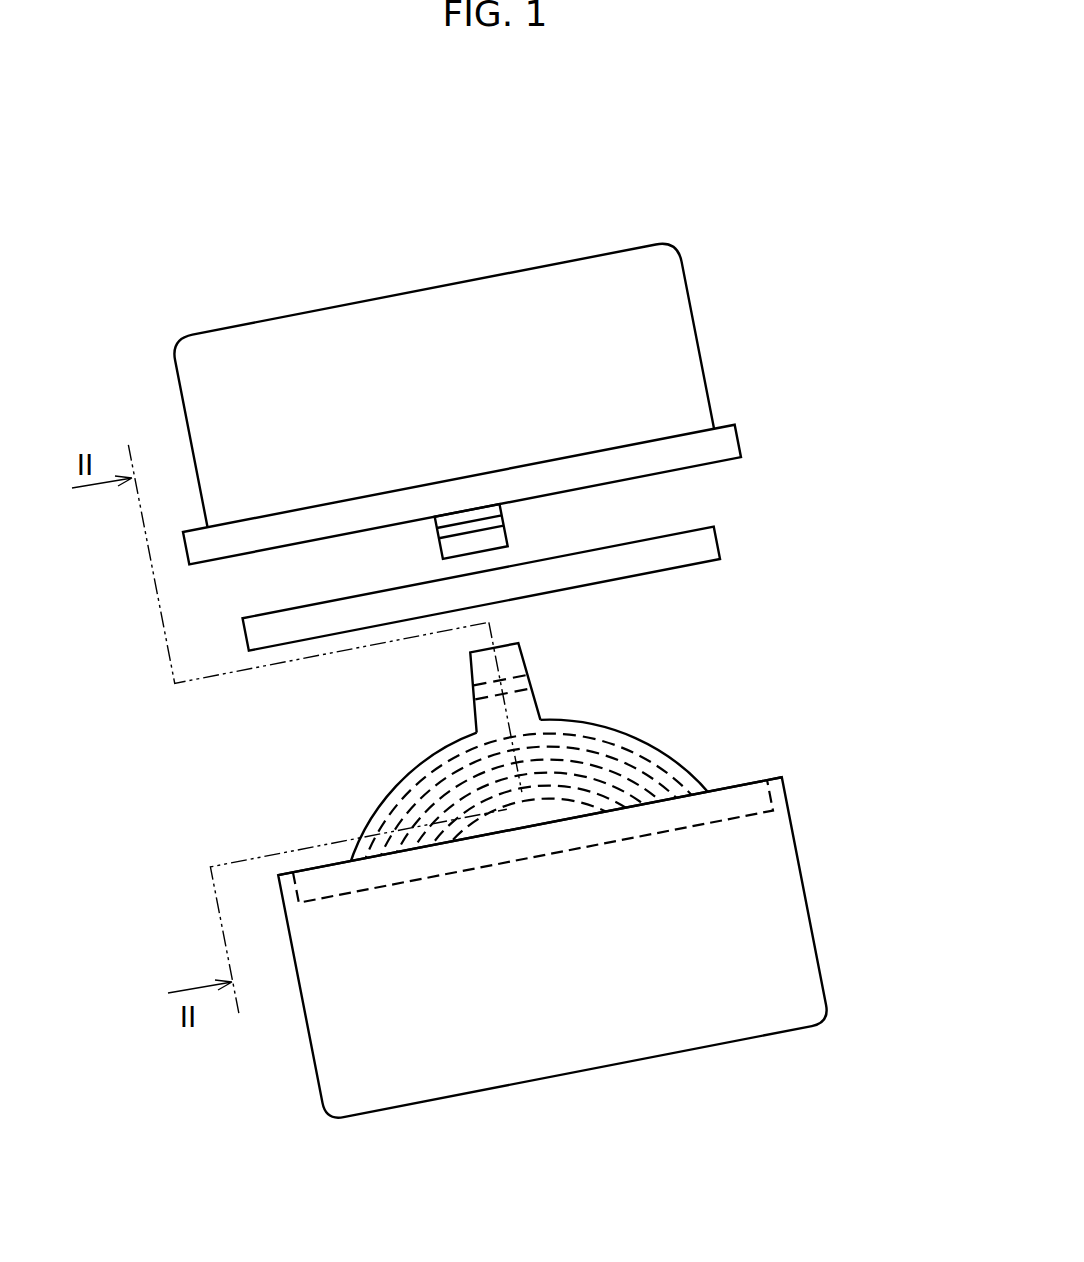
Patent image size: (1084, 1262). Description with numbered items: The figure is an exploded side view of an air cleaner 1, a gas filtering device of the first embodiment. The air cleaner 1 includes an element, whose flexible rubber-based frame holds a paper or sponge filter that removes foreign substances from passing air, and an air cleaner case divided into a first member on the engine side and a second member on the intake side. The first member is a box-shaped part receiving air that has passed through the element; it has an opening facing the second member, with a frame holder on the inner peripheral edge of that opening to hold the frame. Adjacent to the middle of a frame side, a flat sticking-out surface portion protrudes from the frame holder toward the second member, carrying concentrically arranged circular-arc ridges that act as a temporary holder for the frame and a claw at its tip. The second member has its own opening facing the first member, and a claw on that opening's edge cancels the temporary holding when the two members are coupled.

The air cleaner 1 is at (474, 662).